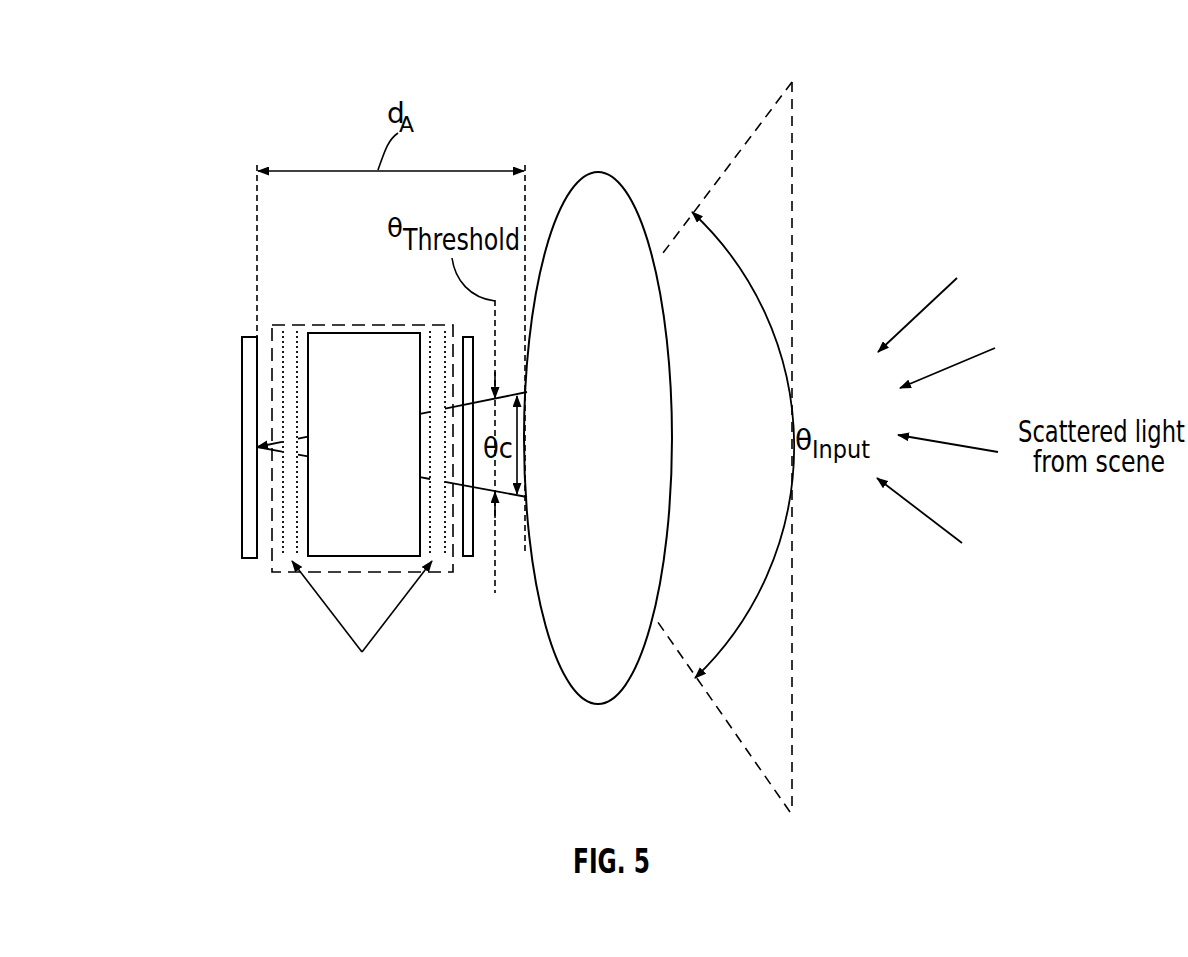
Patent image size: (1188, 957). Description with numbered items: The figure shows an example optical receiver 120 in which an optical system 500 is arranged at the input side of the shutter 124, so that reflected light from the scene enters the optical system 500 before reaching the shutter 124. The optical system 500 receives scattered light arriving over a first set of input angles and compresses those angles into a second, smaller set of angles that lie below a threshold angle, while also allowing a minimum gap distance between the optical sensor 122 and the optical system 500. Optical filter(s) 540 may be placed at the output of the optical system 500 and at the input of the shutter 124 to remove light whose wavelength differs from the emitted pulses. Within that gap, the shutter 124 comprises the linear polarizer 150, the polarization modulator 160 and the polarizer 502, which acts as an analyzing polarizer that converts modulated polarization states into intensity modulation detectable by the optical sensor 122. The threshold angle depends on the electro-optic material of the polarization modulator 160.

The optical receiver 120 is at (879, 79).
The optical system 500 is at (602, 172).
The polarizer 502 is at (291, 330).
The linear polarizer 150 is at (431, 330).
The shutter 124 is at (335, 332).
The optical sensor 122 is at (241, 388).
The polarization modulator 160 is at (338, 558).
The optical filter(s) 540 is at (469, 558).